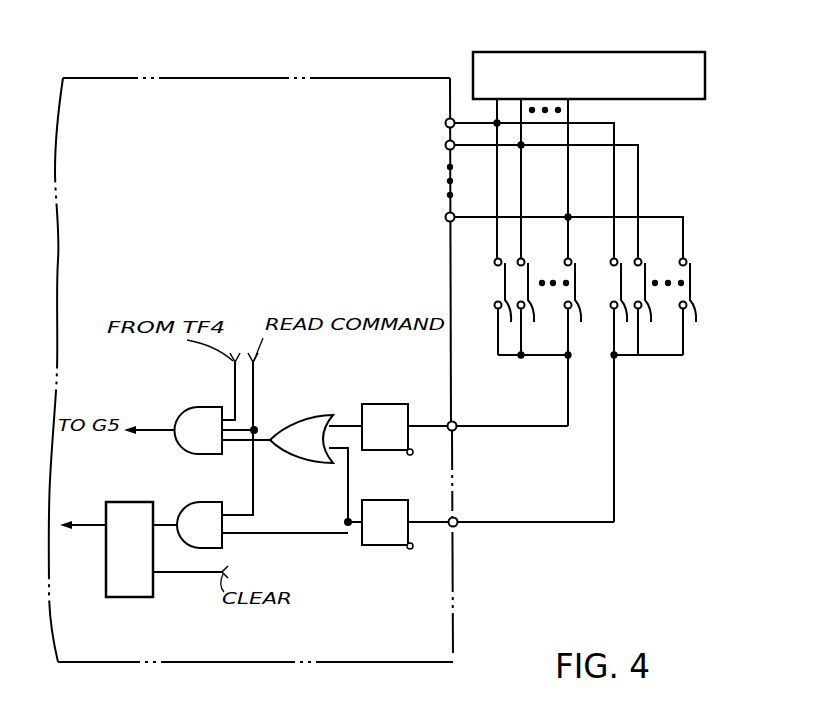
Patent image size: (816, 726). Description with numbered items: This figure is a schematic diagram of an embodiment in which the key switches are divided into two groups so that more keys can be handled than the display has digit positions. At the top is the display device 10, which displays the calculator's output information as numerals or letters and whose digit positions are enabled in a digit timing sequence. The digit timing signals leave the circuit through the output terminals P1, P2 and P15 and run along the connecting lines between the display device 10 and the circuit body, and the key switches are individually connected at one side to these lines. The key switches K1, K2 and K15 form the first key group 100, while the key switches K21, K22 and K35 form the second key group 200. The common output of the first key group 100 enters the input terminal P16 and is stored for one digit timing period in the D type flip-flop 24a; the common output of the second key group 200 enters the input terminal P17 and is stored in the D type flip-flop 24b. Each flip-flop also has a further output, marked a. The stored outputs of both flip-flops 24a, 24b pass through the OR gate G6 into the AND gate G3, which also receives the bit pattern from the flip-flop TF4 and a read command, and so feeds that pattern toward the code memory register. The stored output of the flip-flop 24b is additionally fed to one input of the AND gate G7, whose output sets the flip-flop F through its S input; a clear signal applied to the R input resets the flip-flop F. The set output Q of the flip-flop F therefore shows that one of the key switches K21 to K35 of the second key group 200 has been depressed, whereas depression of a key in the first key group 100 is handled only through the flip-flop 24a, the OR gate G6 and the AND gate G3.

The display device 10 is at (592, 52).
The output terminal P1 is at (445, 124).
The output terminal P2 is at (446, 150).
The output terminal P15 is at (446, 221).
The input terminal P16 is at (459, 424).
The input terminal P17 is at (460, 519).
The key switch K1 is at (509, 307).
The key switch K2 is at (535, 307).
The key switch K15 is at (585, 307).
The key switch K21 is at (627, 307).
The key switch K22 is at (653, 307).
The key switch K35 is at (700, 307).
The first key group 100 is at (494, 357).
The second key group 200 is at (650, 363).
The AND gate G3 is at (183, 445).
The OR gate G6 is at (305, 424).
The AND gate G7 is at (203, 503).
The D type flip-flop 24a is at (375, 452).
The D type flip-flop 24b is at (375, 547).
The flip flop output a is at (414, 455).
The flip-flop F is at (117, 598).